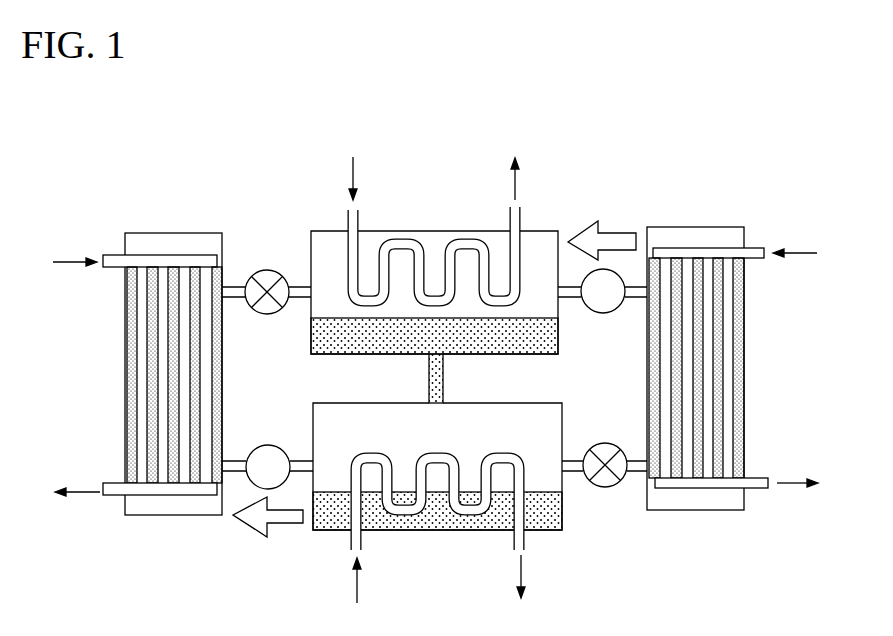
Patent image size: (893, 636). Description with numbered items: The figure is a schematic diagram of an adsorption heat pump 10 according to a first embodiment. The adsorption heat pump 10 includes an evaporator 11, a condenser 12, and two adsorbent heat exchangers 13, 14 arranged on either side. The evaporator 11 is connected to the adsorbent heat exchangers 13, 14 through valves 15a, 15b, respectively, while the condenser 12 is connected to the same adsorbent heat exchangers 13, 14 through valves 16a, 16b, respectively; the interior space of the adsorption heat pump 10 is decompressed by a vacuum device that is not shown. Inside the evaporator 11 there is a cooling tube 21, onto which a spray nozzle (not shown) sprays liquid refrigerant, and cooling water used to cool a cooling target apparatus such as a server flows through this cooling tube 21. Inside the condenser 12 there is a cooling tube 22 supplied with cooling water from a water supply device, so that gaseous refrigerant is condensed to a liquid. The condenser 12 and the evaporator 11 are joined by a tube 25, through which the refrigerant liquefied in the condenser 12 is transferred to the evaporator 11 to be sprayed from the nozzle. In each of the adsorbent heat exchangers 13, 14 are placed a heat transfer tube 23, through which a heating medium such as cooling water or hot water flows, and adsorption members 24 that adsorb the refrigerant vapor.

The adsorption heat pump 10 is at (207, 176).
The evaporator 11 is at (538, 402).
The condenser 12 is at (538, 230).
The adsorbent heat exchanger 13 is at (147, 233).
The adsorbent heat exchanger 14 is at (700, 227).
The valve 15a is at (268, 445).
The valve 15b is at (605, 443).
The valve 16a is at (267, 270).
The valve 16b is at (603, 313).
The cooling tube 21 is at (373, 452).
The cooling tube 22 is at (403, 243).
The heat transfer tube 23 is at (173, 495).
The adsorption members 24 is at (173, 383).
The tube 25 is at (429, 381).